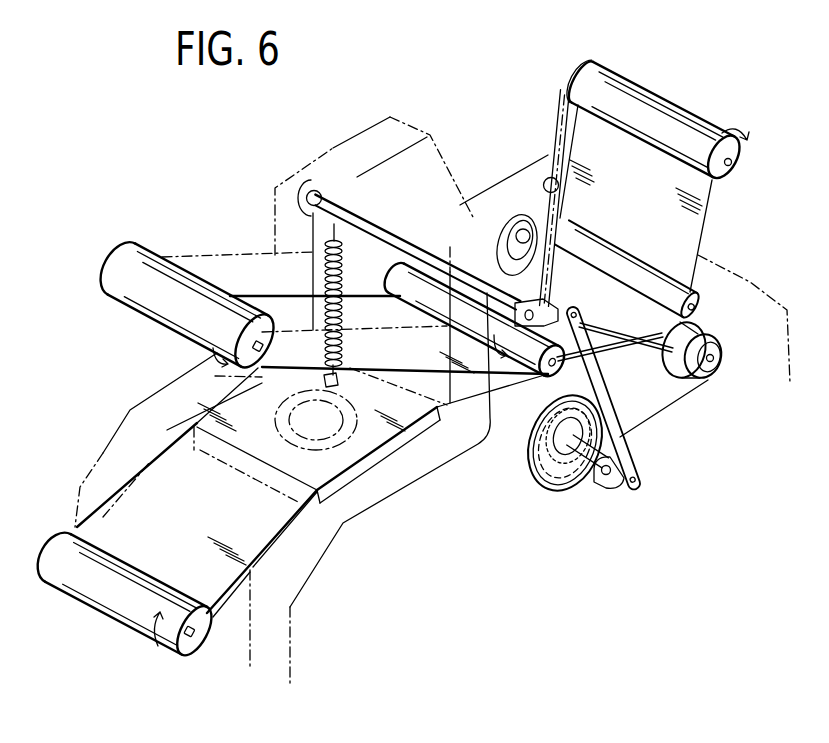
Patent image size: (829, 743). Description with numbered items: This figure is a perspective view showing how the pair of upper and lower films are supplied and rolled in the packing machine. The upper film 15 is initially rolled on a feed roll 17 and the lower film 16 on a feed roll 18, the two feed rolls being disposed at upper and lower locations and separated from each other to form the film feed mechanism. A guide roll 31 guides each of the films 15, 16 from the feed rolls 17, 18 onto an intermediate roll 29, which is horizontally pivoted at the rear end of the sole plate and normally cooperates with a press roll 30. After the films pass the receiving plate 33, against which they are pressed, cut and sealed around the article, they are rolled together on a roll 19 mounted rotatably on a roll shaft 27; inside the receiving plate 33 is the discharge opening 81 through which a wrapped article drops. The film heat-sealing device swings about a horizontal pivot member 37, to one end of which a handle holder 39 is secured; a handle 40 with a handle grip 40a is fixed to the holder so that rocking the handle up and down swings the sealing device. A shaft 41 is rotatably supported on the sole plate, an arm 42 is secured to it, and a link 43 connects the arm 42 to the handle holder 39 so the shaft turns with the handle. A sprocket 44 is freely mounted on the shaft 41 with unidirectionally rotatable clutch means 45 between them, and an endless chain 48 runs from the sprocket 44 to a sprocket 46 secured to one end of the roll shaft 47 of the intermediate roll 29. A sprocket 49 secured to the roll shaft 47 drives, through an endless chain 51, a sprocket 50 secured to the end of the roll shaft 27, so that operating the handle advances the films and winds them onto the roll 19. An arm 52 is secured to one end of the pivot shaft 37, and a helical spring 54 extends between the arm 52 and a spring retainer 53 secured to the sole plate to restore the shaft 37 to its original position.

The upper film 15 is at (257, 291).
The lower film 16 is at (103, 490).
The feed roll 17 is at (140, 262).
The feed roll 18 is at (100, 597).
The roll 19 is at (663, 113).
The roll shaft 27 is at (733, 163).
The intermediate roll 29 is at (644, 368).
The press roll 30 is at (688, 284).
The guide roll 31 is at (534, 372).
The receiving plate 33 is at (185, 379).
The pivot member 37 is at (405, 227).
The handle holder 39 is at (560, 312).
The handle 40 is at (560, 238).
The handle grip 40a is at (575, 184).
The shaft 41 is at (589, 482).
The arm 42 is at (617, 482).
The link 43 is at (620, 437).
The sprocket 44 is at (537, 487).
The clutch means 45 is at (548, 428).
The sprocket 46 is at (714, 337).
The roll shaft 47 is at (716, 366).
The endless chain 48 is at (685, 398).
The sprocket 49 is at (505, 238).
The sprocket 50 is at (582, 62).
The endless chain 51 is at (542, 143).
The arm 52 is at (318, 185).
The spring retainer 53 is at (342, 378).
The helical spring 54 is at (340, 273).
The discharge opening 81 is at (333, 428).